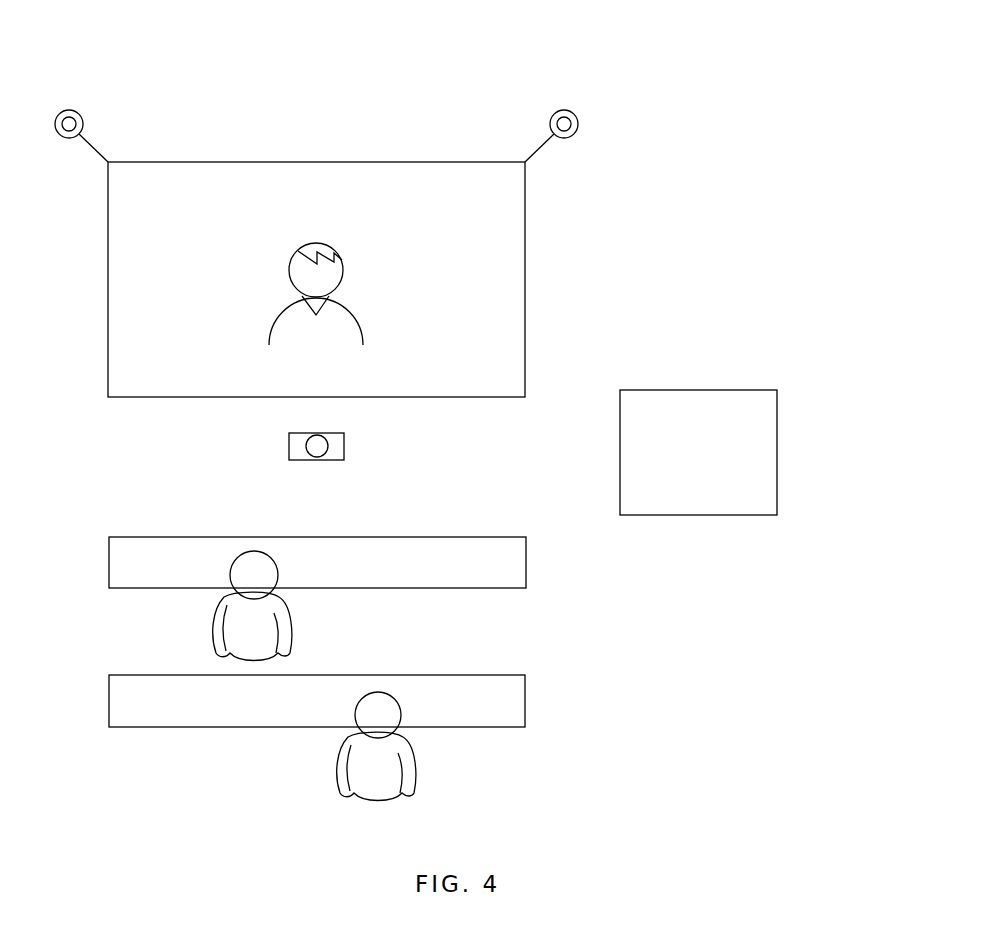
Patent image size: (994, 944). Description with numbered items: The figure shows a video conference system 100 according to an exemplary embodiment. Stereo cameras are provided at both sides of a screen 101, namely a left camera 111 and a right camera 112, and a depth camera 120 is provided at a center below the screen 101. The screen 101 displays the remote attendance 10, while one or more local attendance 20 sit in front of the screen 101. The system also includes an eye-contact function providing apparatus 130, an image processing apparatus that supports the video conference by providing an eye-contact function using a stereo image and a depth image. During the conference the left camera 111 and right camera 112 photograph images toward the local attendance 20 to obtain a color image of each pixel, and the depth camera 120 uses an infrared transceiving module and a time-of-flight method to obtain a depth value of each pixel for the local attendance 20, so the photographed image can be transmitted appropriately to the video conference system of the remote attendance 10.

The video conference system 100 is at (580, 36).
The screen 101 is at (525, 280).
The left camera 111 is at (83, 123).
The right camera 112 is at (578, 123).
The remote attendance 10 is at (364, 326).
The depth camera 120 is at (344, 446).
The eye-contact function providing apparatus 130 is at (777, 452).
The local attendance 20 is at (291, 635).